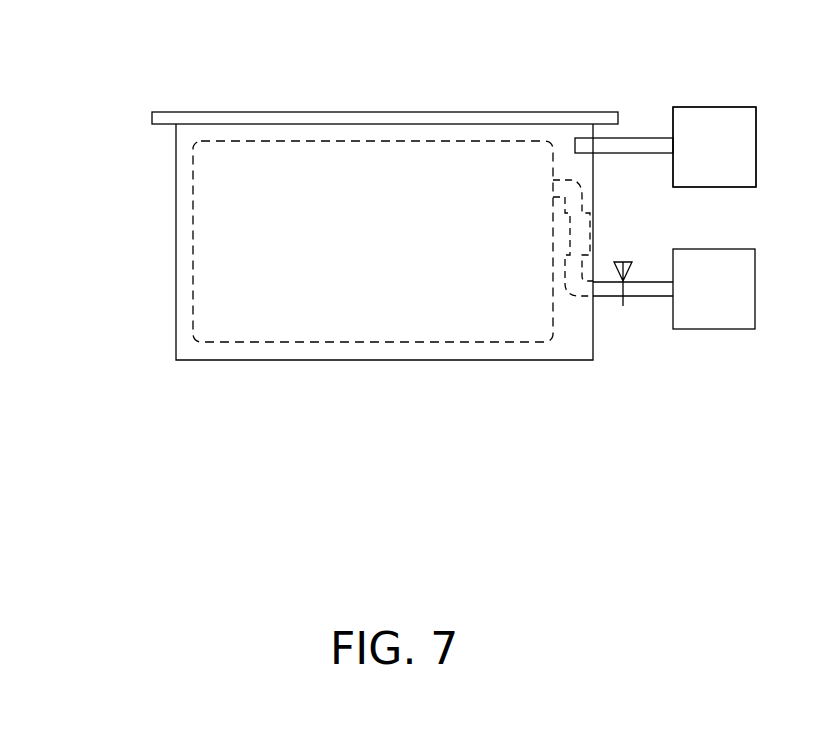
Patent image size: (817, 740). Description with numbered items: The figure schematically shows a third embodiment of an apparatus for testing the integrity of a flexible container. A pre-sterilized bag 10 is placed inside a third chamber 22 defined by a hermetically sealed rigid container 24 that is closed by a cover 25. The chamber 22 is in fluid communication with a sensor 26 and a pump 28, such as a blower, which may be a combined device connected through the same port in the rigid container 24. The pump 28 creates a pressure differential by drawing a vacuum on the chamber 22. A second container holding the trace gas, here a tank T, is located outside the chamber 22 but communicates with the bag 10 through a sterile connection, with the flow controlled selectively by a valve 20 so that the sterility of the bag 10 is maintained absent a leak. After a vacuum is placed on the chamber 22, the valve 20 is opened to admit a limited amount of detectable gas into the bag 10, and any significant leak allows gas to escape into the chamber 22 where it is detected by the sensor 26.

The bag 10 is at (323, 342).
The valve 20 is at (625, 262).
The third chamber 22 is at (573, 349).
The rigid container 24 is at (176, 254).
The cover 25 is at (605, 112).
The sensor 26 is at (730, 107).
The pump 28 is at (714, 147).
The tank T is at (731, 330).